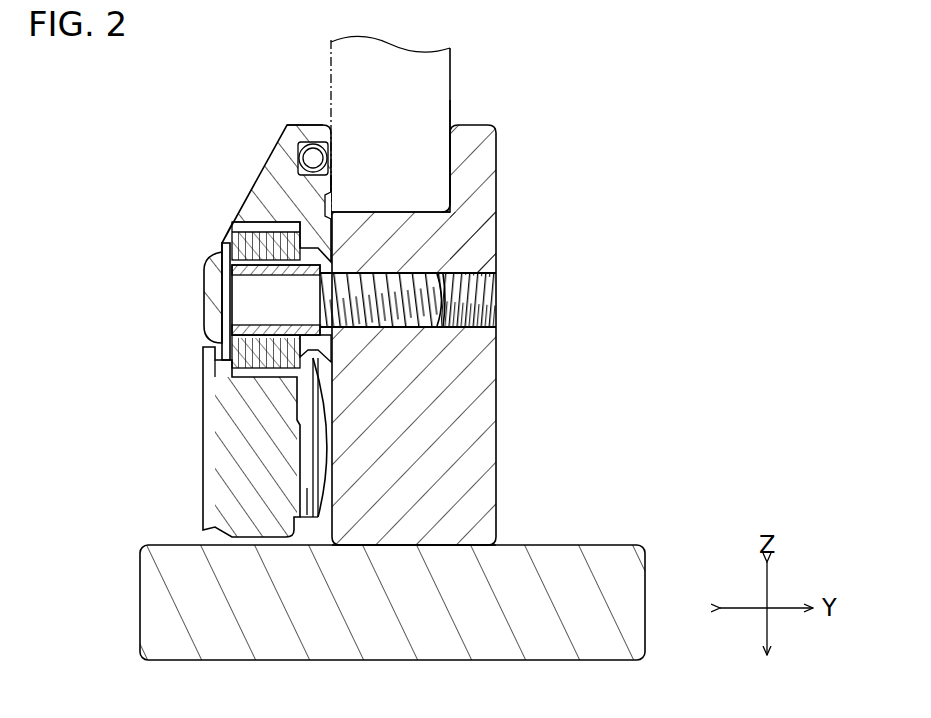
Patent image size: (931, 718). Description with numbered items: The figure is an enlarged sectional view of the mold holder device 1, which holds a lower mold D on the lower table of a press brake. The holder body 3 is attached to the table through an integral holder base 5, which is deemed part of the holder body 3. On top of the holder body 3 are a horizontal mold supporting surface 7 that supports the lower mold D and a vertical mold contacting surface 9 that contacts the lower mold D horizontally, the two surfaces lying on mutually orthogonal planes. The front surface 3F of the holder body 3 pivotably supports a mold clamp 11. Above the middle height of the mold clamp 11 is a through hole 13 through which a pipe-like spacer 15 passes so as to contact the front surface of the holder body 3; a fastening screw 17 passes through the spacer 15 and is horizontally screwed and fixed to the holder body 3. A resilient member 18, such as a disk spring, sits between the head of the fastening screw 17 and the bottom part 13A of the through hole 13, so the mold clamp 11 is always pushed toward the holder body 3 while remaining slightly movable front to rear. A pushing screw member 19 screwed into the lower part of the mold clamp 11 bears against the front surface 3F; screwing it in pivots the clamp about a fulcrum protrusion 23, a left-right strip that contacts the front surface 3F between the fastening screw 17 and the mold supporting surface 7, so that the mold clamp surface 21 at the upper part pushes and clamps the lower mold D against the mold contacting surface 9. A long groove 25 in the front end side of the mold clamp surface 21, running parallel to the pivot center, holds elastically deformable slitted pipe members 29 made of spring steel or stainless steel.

The mold holder device 1 is at (562, 224).
The holder body 3 is at (483, 492).
The front surface 3F is at (320, 546).
The holder base 5 is at (610, 548).
The mold supporting surface 7 is at (403, 211).
The mold contacting surface 9 is at (448, 165).
The mold clamp 11 is at (233, 490).
The through hole 13 is at (268, 221).
The bottom part of the through hole 13A is at (316, 220).
The spacer 15 is at (310, 350).
The fastening screw 17 is at (248, 298).
The resilient member 18 is at (232, 368).
The pushing screw member 19 is at (305, 440).
The mold clamp surface 21 is at (333, 184).
The fulcrum protrusion 23 is at (336, 221).
The long groove 25 is at (296, 124).
The pipe member 29 is at (332, 157).
The lower mold D is at (452, 53).